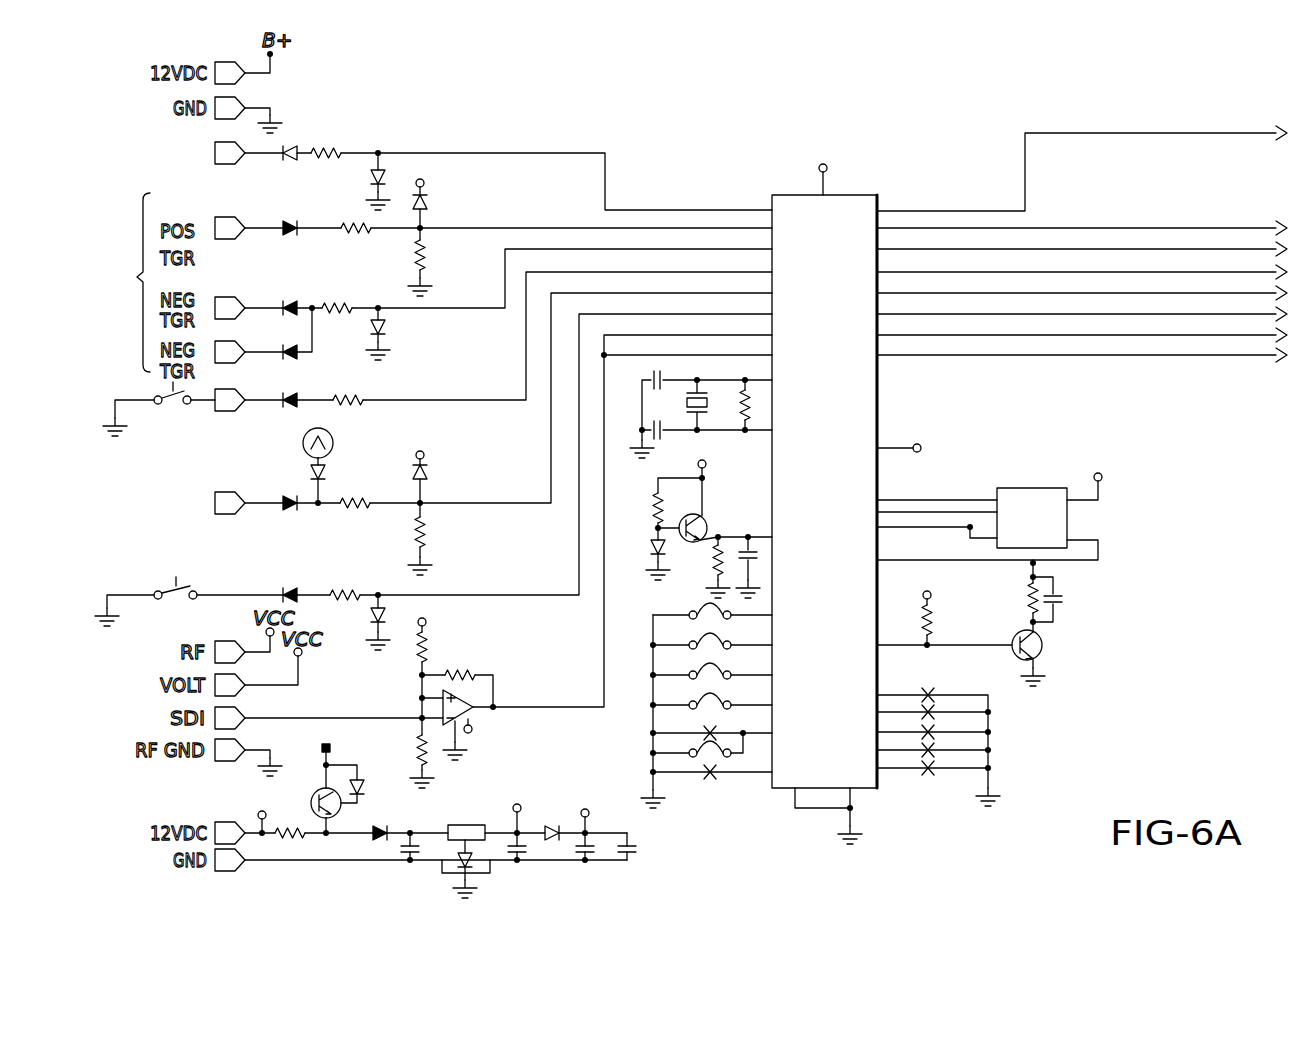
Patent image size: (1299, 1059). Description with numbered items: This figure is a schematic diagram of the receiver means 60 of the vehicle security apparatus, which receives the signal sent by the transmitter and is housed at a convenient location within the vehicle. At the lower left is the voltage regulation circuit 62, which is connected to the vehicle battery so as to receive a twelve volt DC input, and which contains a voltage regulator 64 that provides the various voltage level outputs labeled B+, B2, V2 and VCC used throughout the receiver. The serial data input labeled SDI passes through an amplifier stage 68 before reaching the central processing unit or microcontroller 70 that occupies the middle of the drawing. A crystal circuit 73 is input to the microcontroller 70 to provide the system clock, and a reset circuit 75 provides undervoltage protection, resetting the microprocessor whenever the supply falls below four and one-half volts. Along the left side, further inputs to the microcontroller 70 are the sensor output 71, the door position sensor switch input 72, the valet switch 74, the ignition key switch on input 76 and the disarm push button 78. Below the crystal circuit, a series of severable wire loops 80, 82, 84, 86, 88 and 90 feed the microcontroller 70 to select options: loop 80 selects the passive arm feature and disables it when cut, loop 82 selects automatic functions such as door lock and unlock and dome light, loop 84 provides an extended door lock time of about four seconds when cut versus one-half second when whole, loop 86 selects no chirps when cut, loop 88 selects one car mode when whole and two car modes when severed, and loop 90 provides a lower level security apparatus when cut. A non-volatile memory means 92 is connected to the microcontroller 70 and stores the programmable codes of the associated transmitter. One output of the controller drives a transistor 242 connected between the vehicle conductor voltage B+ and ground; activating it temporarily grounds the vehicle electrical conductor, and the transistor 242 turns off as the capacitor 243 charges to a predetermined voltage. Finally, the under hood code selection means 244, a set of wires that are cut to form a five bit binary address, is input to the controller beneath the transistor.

The receiver means 60 is at (758, 131).
The voltage regulation circuit 62 is at (325, 855).
The voltage regulator 64 is at (456, 821).
The comparator amplifier 68 is at (470, 708).
The microcontroller 70 is at (866, 779).
The sensor output 71 is at (137, 132).
The door position sensor switch input 72 is at (436, 282).
The crystal circuit 73 is at (640, 399).
The valet switch 74 is at (112, 402).
The reset circuit 75 is at (655, 500).
The ignition key switch "on" input 76 is at (125, 494).
The disarm push button 78 is at (135, 570).
The loop 80 is at (722, 606).
The loop 82 is at (722, 636).
The loop 84 is at (722, 666).
The loop 86 is at (722, 696).
The loop 88 is at (712, 725).
The loop 90 is at (709, 780).
The non-volatile memory means 92 is at (1067, 527).
The transistor 242 is at (1045, 652).
The capacitor 243 is at (1060, 610).
The under hood code selection means 244 is at (950, 772).